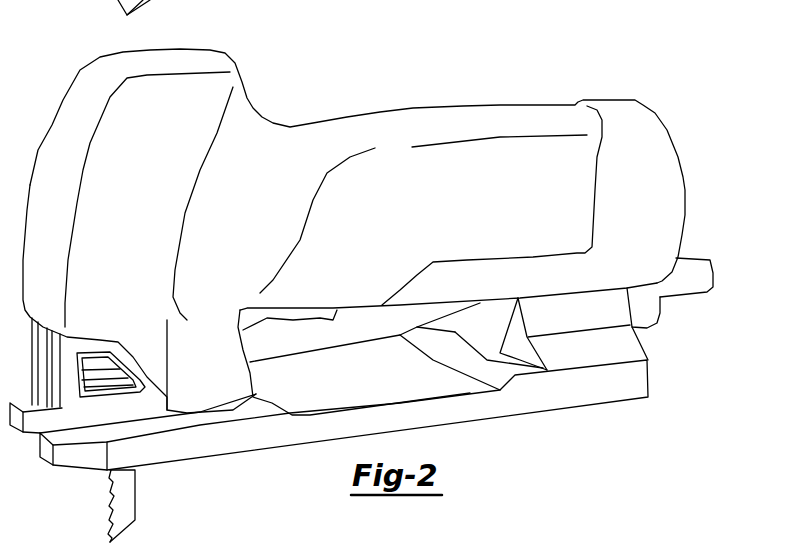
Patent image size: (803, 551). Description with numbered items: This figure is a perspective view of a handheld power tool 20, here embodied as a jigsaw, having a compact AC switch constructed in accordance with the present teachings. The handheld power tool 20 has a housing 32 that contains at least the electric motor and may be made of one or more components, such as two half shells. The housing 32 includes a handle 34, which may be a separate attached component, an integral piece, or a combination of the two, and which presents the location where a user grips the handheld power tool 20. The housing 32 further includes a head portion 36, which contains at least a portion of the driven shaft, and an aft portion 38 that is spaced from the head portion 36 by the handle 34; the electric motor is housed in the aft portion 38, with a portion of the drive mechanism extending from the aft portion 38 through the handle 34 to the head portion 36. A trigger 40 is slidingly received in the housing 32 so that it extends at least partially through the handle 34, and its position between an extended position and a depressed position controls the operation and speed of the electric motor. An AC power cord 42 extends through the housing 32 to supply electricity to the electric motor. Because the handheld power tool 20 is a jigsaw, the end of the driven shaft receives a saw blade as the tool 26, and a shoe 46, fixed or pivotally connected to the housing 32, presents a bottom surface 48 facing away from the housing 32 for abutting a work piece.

The handheld power tool 20 is at (354, 218).
The tool 26 is at (145, 506).
The housing 32 is at (335, 349).
The handle 34 is at (418, 169).
The head portion 36 is at (164, 165).
The aft portion 38 is at (512, 178).
The trigger 40 is at (207, 353).
The AC power cord 42 is at (688, 255).
The shoe 46 is at (344, 415).
The bottom surface 48 is at (339, 422).